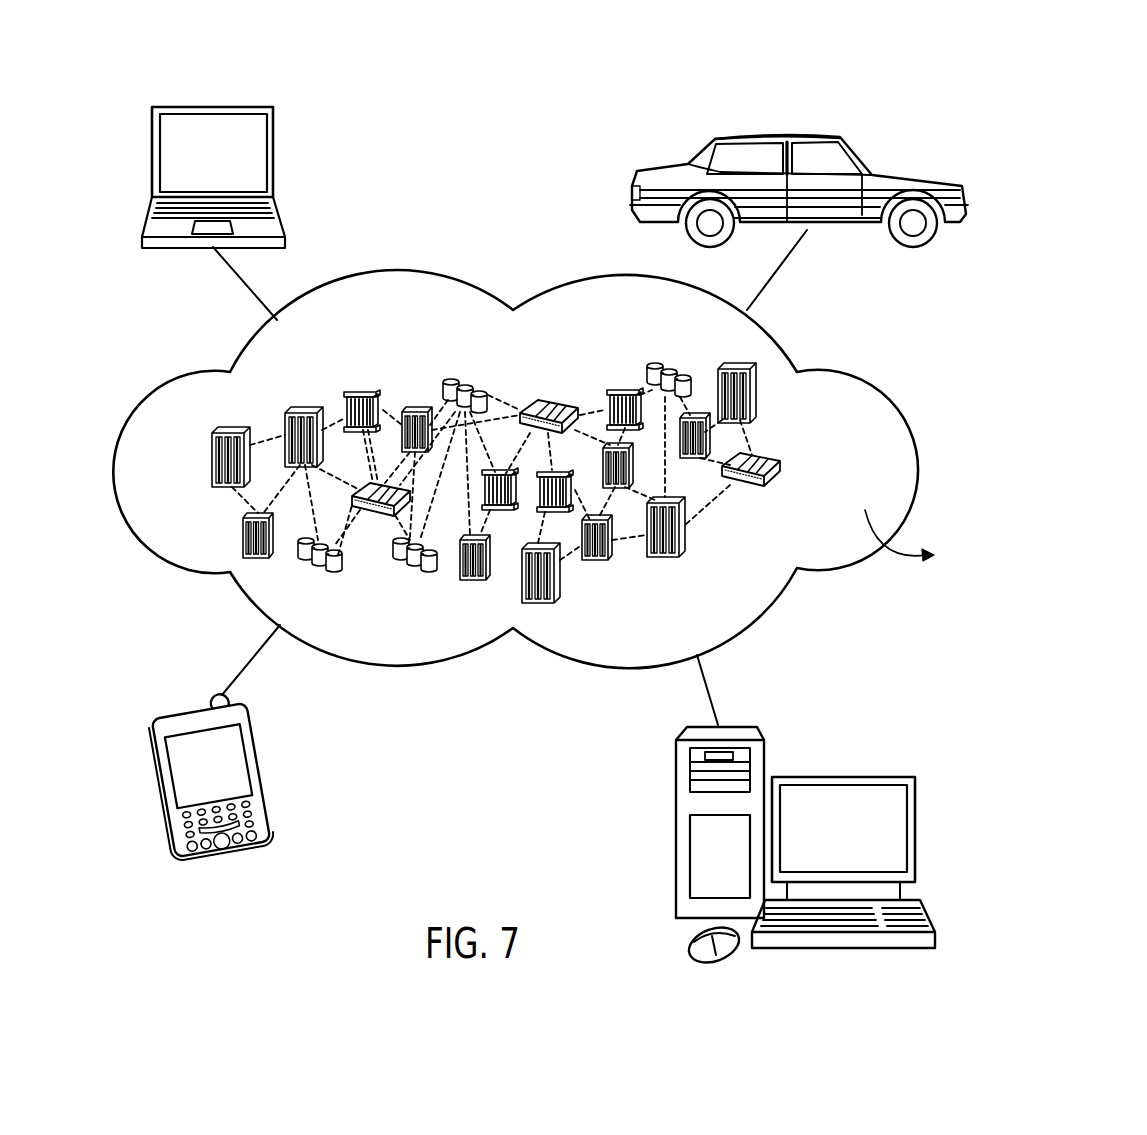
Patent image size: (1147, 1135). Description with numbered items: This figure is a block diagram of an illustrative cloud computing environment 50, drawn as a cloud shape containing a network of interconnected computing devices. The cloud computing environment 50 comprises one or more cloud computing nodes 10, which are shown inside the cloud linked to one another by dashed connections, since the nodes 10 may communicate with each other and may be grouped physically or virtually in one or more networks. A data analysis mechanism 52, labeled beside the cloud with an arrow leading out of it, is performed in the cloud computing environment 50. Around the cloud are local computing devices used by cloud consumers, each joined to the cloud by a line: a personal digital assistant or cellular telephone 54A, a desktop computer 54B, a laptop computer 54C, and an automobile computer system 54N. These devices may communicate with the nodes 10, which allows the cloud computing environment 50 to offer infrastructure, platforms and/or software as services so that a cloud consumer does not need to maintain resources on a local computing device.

The cloud computing nodes 10 is at (792, 472).
The cloud computing environment 50 is at (857, 378).
The data analysis mechanism 52 is at (1003, 518).
The personal digital assistant (PDA) or cellular telephone 54A is at (192, 710).
The desktop computer 54B is at (842, 776).
The laptop computer 54C is at (213, 106).
The automobile computer system 54N is at (780, 133).